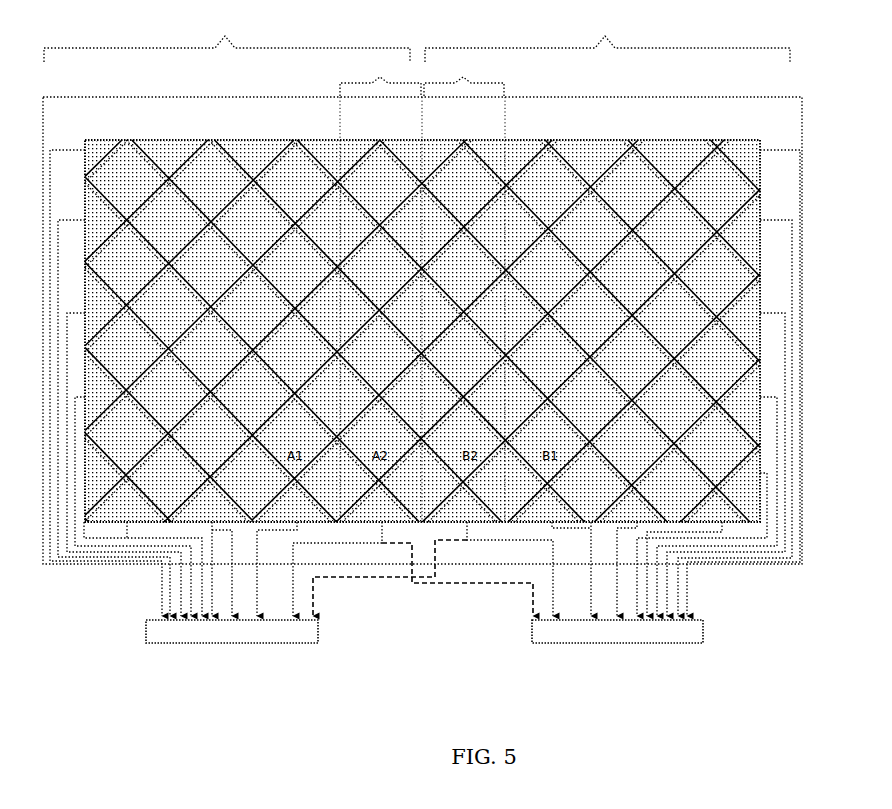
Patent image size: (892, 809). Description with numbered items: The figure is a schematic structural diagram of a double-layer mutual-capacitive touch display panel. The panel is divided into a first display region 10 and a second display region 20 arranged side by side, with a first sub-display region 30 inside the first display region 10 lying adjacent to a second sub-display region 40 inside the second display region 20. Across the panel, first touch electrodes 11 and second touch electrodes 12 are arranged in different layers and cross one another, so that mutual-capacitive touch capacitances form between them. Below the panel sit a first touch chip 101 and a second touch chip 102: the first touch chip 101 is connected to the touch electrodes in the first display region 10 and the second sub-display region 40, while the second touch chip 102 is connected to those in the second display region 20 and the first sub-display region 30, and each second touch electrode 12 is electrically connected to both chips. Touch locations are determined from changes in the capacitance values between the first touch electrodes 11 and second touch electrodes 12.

The first display region 10 is at (227, 35).
The second display region 20 is at (607, 36).
The first sub-display region 30 is at (380, 75).
The second sub-display region 40 is at (464, 75).
The first touch electrodes 11 is at (141, 170).
The second touch electrodes 12 is at (250, 172).
The first touch chip 101 is at (232, 631).
The second touch chip 102 is at (617, 631).